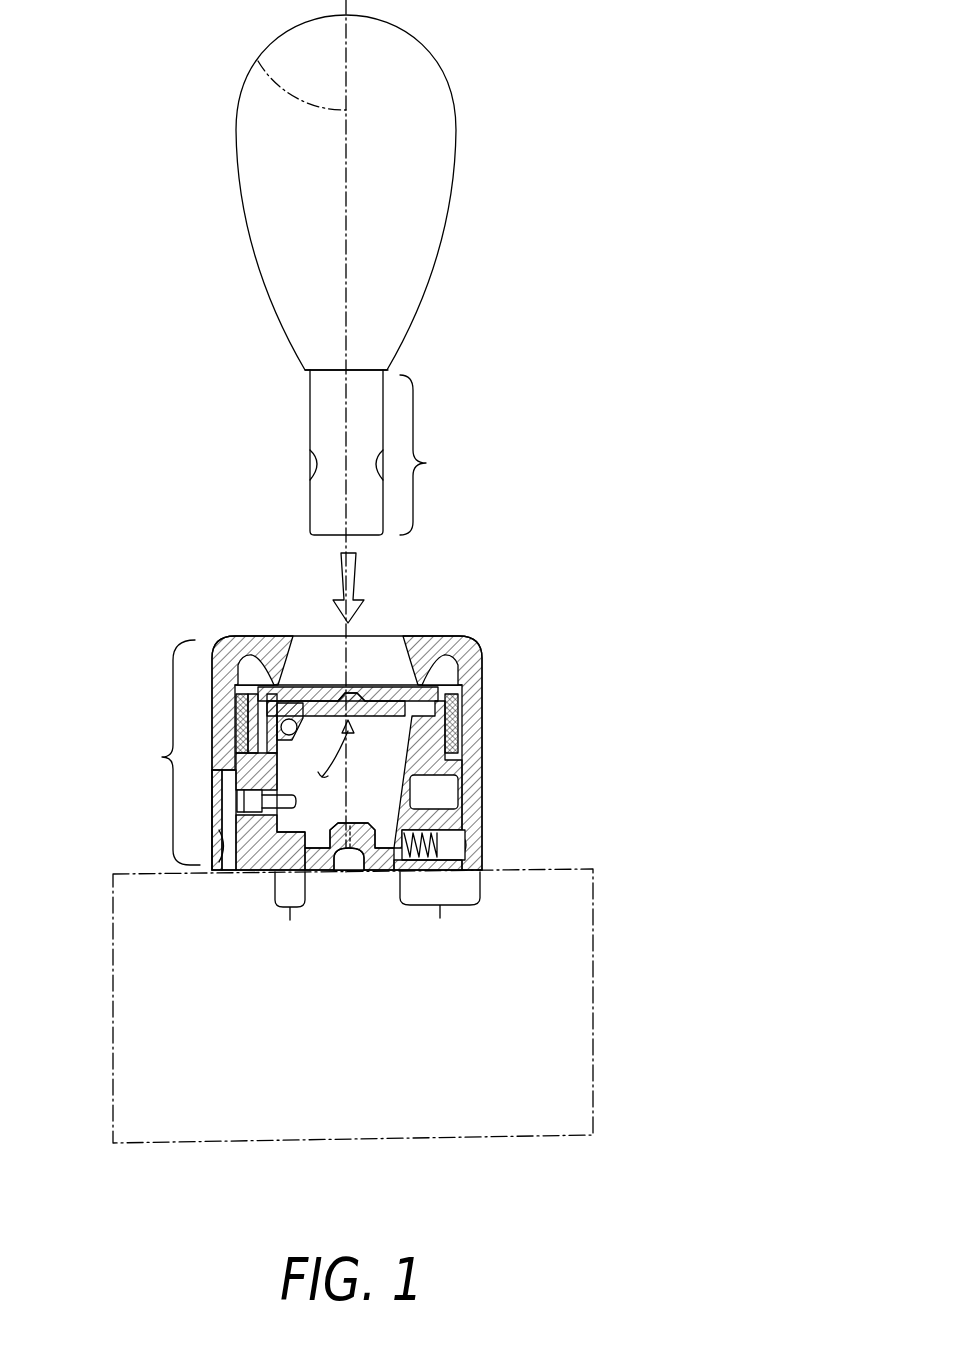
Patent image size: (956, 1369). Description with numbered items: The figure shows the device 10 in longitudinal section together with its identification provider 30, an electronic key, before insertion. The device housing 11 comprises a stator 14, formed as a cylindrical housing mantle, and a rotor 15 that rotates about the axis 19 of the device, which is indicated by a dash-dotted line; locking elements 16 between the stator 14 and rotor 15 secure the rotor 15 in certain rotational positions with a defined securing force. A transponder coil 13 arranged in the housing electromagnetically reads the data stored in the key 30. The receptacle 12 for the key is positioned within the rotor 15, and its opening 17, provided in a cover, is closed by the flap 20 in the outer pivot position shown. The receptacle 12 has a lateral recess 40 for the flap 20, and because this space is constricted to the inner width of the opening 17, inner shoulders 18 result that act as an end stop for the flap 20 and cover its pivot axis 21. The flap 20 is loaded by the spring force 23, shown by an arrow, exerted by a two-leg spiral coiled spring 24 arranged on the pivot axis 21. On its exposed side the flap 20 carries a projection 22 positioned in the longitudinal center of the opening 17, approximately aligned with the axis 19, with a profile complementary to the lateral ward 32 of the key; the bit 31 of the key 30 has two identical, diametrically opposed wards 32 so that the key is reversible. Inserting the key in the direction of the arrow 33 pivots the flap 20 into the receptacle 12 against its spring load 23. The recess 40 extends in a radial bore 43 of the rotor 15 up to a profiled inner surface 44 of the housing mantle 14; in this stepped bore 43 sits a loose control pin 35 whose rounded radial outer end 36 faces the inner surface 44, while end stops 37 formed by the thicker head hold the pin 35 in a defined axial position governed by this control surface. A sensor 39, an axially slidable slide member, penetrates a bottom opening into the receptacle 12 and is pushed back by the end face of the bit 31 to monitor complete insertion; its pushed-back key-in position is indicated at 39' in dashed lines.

The device 10 is at (597, 868).
The device housing 11 is at (162, 757).
The receptacle 12 is at (386, 769).
The transponder coil 13 is at (461, 713).
The stator 14 is at (470, 822).
The rotor 15 is at (455, 770).
The locking elements 16 is at (437, 891).
The opening 17 is at (393, 683).
The inner shoulders 18 is at (283, 636).
The axis 19 is at (258, 61).
The flap 20 is at (333, 683).
The pivot axis 21 is at (236, 690).
The projection 22 is at (387, 690).
The spring force 23 is at (334, 768).
The spiral coiled spring 24 is at (236, 762).
The identification provider 30 is at (460, 77).
The bit 31 is at (426, 463).
The lateral ward 32 is at (322, 468).
The insertion direction arrow 33 is at (347, 580).
The control pin 35 is at (255, 870).
The radial outer end 36 is at (243, 808).
The end stops 37 is at (240, 786).
The sensor 39 is at (353, 888).
The switch actuator dome 39' is at (354, 920).
The lateral recess 40 is at (288, 912).
The radial bore 43 is at (245, 872).
The profiled inner surface 44 is at (213, 873).